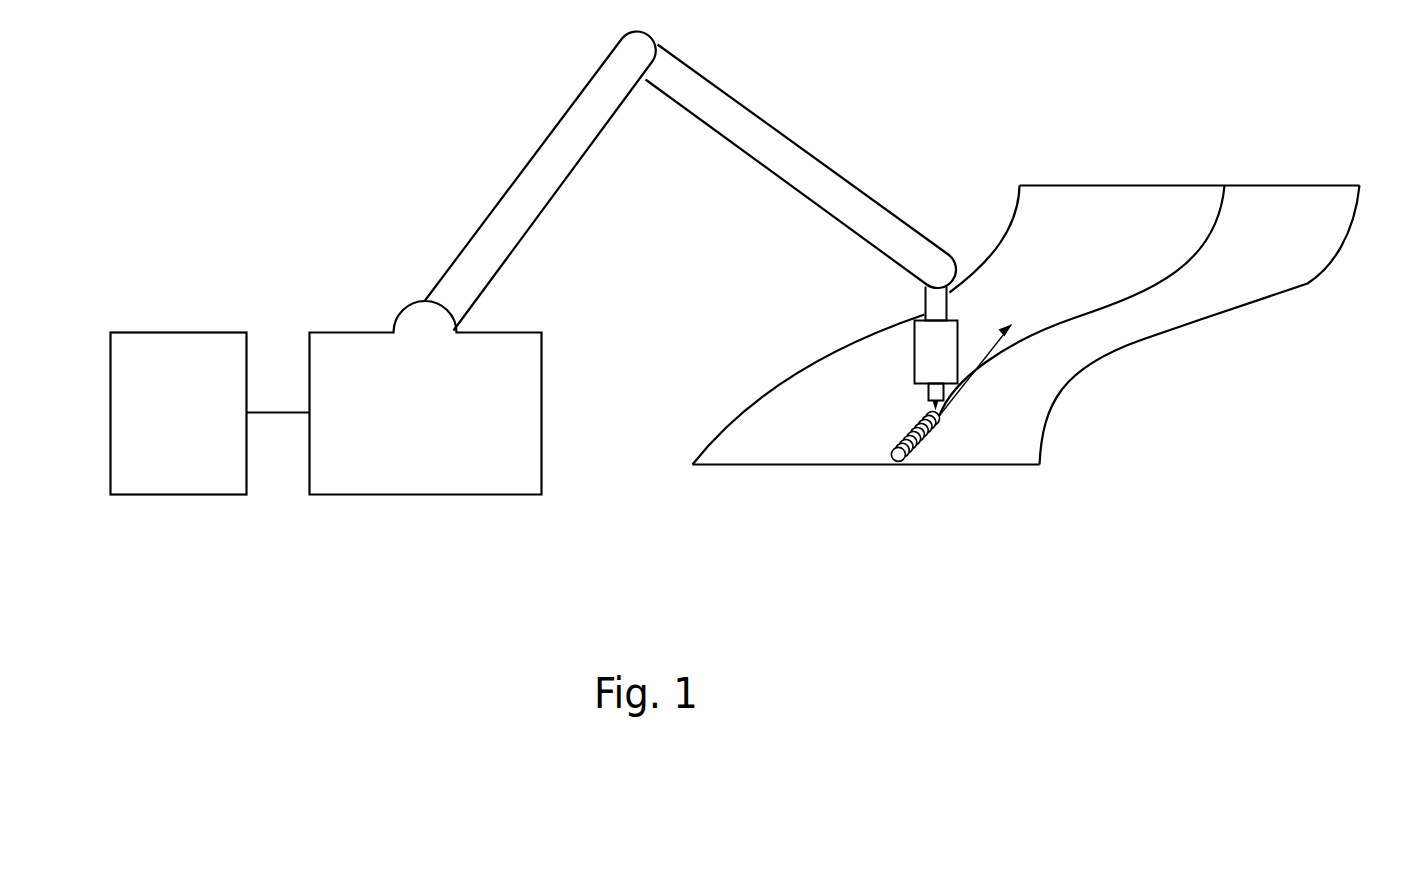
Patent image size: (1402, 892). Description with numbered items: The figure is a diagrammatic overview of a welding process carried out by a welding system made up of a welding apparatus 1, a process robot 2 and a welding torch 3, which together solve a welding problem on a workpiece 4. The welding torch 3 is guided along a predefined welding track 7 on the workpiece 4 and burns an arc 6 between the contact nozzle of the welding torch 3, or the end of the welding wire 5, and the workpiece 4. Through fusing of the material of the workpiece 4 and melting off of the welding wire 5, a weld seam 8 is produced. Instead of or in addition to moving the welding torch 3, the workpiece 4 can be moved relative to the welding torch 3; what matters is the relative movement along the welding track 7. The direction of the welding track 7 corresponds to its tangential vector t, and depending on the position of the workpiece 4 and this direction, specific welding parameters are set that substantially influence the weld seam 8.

The welding apparatus 1 is at (172, 322).
The process robot 2 is at (470, 258).
The welding torch 3 is at (924, 332).
The workpiece 4 is at (1262, 252).
The welding wire 5 is at (928, 408).
The arc 6 is at (932, 408).
The welding track 7 is at (1122, 304).
The weld seam 8 is at (910, 442).